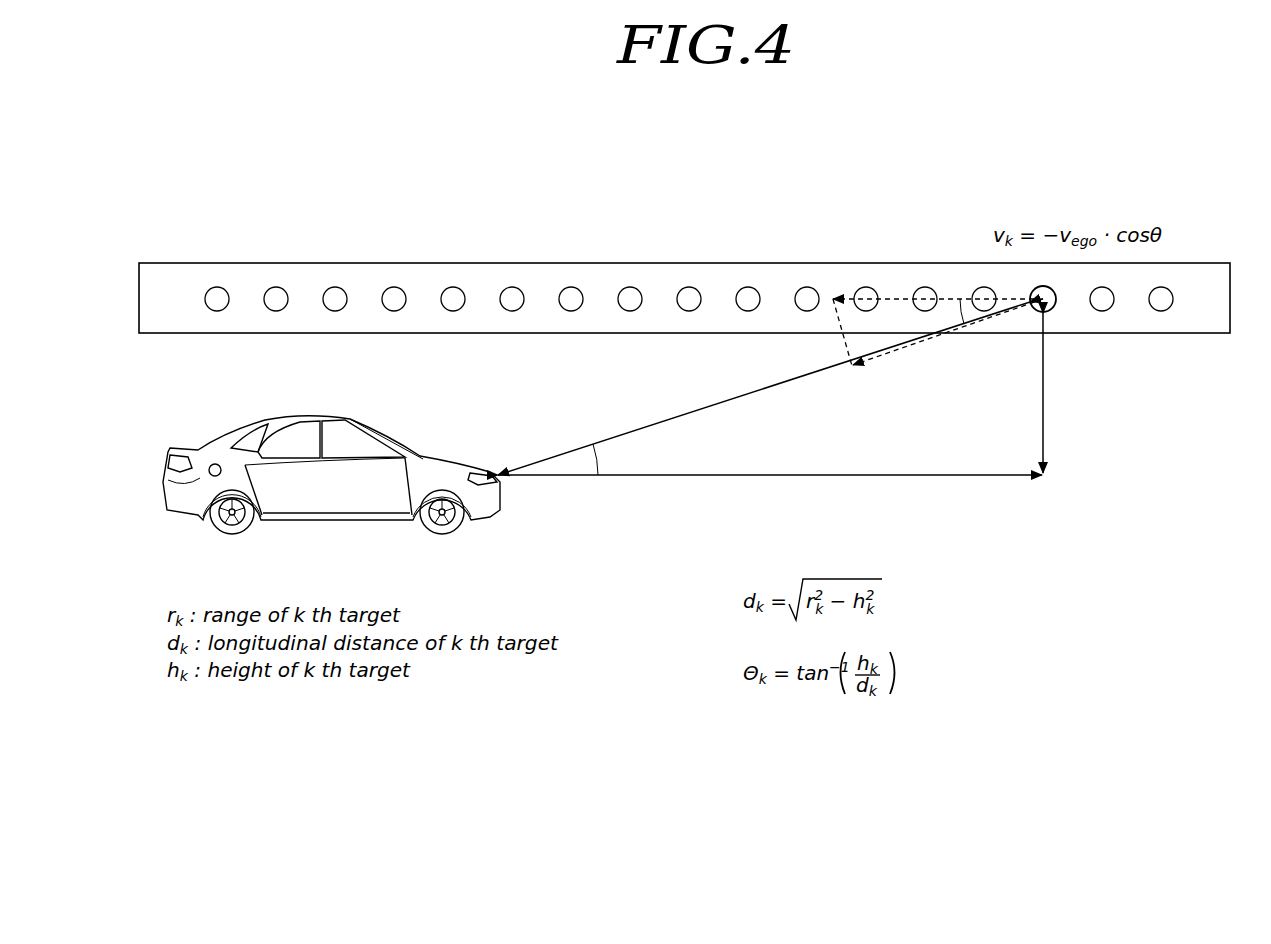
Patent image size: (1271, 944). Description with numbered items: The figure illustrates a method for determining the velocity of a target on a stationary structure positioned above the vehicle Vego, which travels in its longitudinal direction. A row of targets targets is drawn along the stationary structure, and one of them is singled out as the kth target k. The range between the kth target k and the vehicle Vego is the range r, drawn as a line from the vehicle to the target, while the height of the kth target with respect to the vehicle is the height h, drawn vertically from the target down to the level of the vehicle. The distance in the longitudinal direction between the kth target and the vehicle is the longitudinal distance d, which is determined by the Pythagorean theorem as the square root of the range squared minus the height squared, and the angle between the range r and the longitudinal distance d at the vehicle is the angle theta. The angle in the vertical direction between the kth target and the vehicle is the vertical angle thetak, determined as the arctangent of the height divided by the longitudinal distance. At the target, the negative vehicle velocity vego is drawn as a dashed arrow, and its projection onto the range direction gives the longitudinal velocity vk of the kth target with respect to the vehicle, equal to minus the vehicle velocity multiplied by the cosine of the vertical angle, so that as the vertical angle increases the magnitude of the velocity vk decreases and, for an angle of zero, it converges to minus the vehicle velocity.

The targets on the stationary structure targets is at (684, 298).
The kth target k is at (1054, 308).
The range of kth target r is at (764, 388).
The longitudinal distance of kth target d is at (770, 494).
The height of kth target h is at (1053, 393).
The negative vehicle velocity vego is at (938, 315).
The velocity of kth target vk is at (948, 333).
The vertical angle of kth target thetak is at (950, 314).
The angle theta is at (604, 459).
The vehicle Vego is at (331, 486).